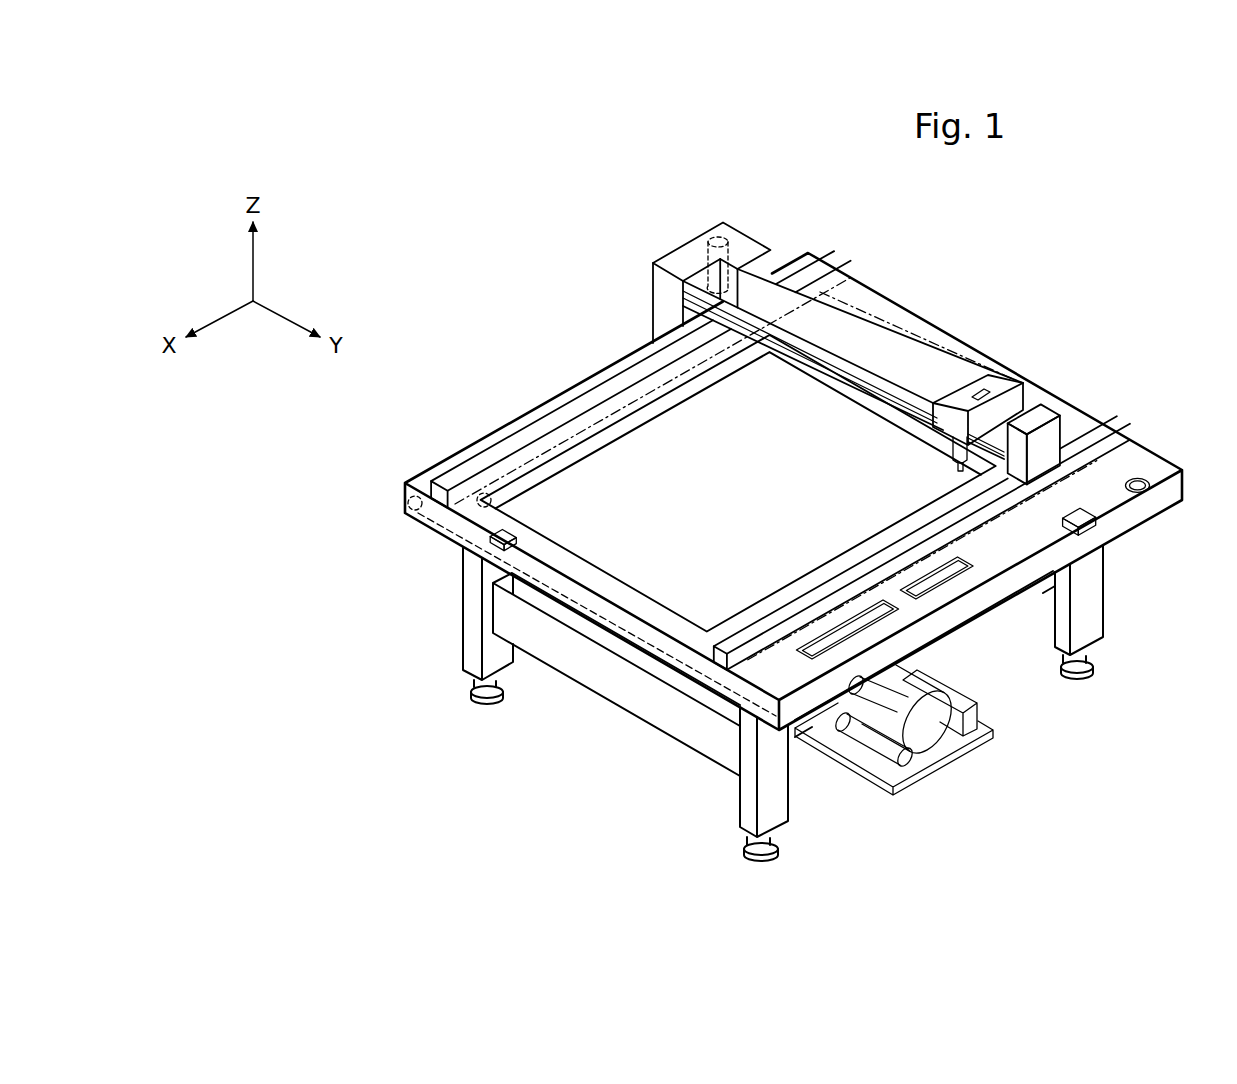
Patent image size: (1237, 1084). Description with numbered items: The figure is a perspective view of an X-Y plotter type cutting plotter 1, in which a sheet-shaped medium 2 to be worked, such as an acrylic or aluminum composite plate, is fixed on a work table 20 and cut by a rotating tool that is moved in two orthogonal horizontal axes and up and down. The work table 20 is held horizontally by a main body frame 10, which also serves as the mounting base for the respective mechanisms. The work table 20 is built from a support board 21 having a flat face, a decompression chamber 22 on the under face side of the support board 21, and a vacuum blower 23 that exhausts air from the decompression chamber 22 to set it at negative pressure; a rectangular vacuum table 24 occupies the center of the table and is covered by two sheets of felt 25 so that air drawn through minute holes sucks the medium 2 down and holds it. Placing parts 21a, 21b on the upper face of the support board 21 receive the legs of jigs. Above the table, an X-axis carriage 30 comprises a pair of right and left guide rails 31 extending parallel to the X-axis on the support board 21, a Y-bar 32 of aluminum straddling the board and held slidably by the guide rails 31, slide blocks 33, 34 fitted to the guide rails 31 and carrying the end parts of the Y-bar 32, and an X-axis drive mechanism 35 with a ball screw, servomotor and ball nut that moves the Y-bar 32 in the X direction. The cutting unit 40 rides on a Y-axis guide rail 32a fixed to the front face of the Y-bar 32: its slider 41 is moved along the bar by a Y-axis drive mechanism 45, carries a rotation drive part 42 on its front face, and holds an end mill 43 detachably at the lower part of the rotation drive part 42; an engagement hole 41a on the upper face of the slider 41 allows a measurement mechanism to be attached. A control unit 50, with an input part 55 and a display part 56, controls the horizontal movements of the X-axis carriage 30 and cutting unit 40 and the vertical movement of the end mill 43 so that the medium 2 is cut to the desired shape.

The cutting plotter 1 is at (1118, 223).
The medium to be worked 2 is at (728, 507).
The main body frame 10 is at (457, 596).
The work table 20 is at (530, 379).
The support board 21 is at (566, 575).
The placing part 21a is at (1097, 531).
The placing part 21b is at (497, 542).
The decompression chamber 22 is at (636, 633).
The vacuum blower 23 is at (958, 767).
The vacuum table 24 is at (632, 392).
The felt 25 is at (484, 494).
The X-axis carriage 30 is at (911, 340).
The guide rail 31 is at (625, 387).
The Y-bar 32 is at (852, 310).
The Y-axis guide rail 32a is at (845, 365).
The slide block 33 is at (1048, 425).
The slide block 34 is at (693, 248).
The X-axis drive mechanism 35 is at (412, 500).
The cutting unit 40 is at (1028, 364).
The slider 41 is at (1065, 395).
The engagement hole 41a is at (975, 385).
The rotation drive part 42 is at (948, 452).
The end mill 43 is at (958, 472).
The Y-axis drive mechanism 45 is at (722, 238).
The control unit 50 is at (922, 615).
The input part 55 is at (822, 656).
The display part 56 is at (942, 590).